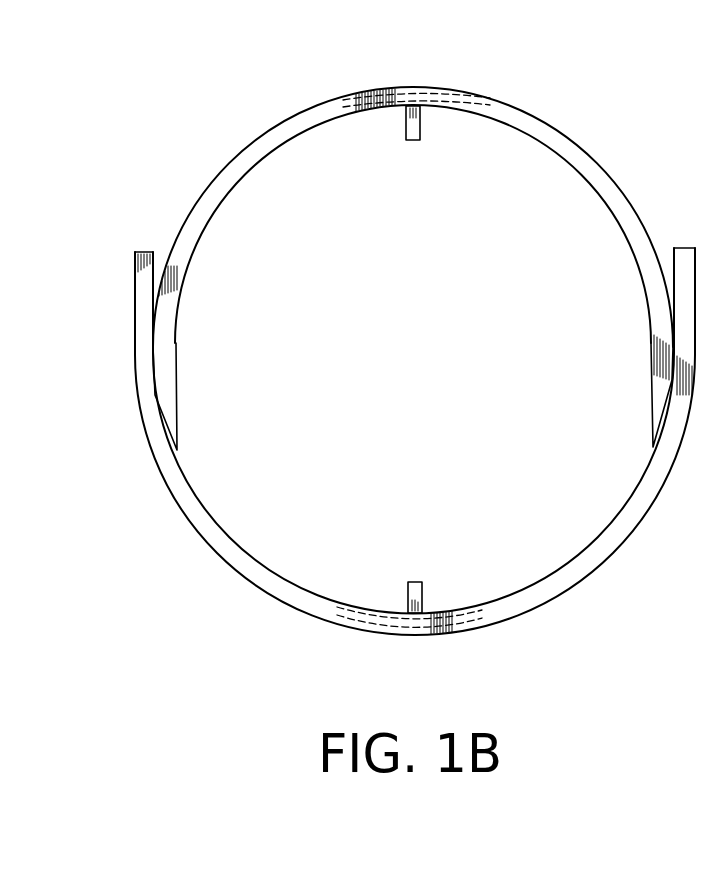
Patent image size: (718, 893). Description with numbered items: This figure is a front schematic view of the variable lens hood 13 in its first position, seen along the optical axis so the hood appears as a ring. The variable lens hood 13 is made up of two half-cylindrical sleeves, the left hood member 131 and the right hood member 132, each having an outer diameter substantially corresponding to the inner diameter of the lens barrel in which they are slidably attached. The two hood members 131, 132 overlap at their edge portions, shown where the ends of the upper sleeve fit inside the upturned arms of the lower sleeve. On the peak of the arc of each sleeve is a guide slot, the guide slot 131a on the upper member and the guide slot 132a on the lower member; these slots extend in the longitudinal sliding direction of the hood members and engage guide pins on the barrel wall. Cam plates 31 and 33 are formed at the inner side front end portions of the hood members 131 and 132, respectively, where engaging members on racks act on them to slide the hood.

The variable lens hood 13 is at (442, 75).
The left hood member 131 is at (583, 117).
The guide slot 131a is at (406, 92).
The cam plate 31 is at (420, 131).
The right hood member 132 is at (330, 613).
The guide slot 132a is at (405, 636).
The cam plate 33 is at (408, 582).